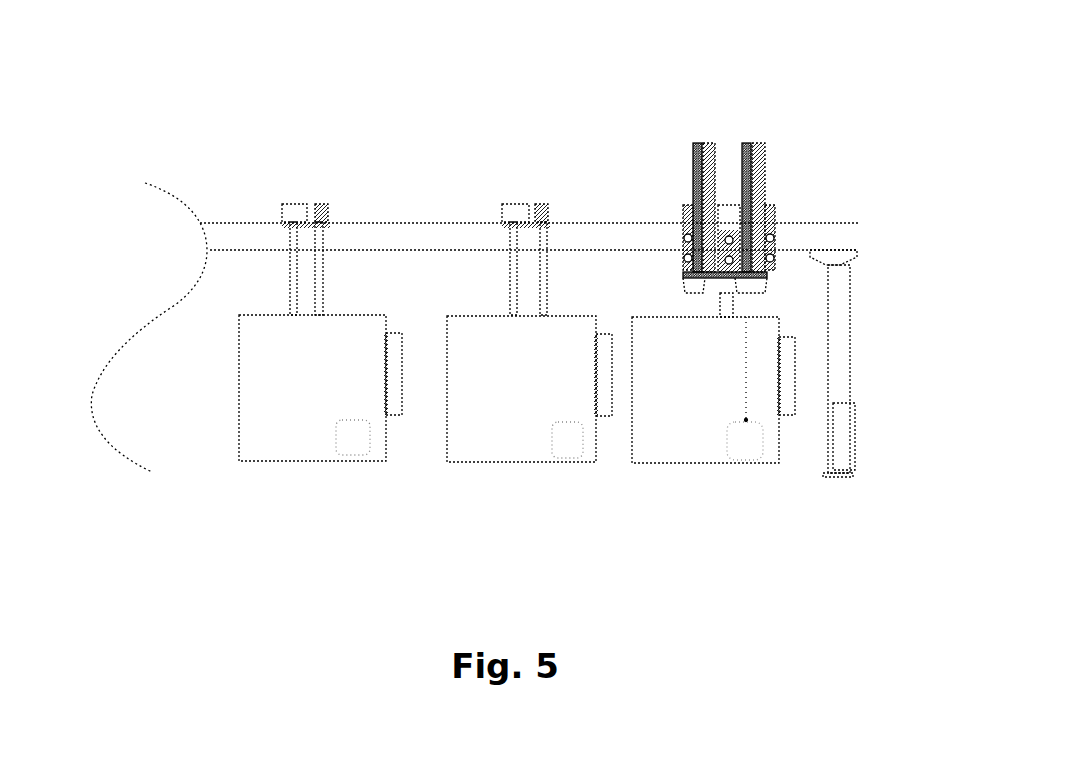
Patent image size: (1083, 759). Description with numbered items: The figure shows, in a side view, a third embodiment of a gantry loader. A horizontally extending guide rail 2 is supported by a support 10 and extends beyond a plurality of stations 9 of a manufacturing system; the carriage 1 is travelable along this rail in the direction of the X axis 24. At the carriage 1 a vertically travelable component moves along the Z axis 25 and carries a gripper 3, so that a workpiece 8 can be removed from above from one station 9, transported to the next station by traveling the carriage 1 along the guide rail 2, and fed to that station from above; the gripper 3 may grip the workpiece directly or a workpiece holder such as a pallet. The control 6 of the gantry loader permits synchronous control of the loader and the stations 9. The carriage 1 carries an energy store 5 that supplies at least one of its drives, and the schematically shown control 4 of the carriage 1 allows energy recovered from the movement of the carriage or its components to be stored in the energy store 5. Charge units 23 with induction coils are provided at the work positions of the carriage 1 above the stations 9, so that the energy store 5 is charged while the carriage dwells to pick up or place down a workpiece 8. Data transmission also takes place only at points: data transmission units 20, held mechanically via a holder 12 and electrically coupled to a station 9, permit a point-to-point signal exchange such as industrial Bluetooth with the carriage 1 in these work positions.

The carriage 1 is at (175, 107).
The guide rail 2 is at (862, 240).
The gripper 3 is at (760, 282).
The control of the carriage 4 is at (765, 210).
The energy store 5 is at (723, 205).
The control of the gantry loader 6 is at (690, 200).
The workpiece 8 is at (753, 311).
The station 9 is at (647, 453).
The support 10 is at (840, 420).
The holder 12 is at (512, 273).
The data transmission unit 20 is at (325, 205).
The charge unit 23 is at (290, 205).
The X axis 24 is at (370, 215).
The Z axis 25 is at (670, 167).